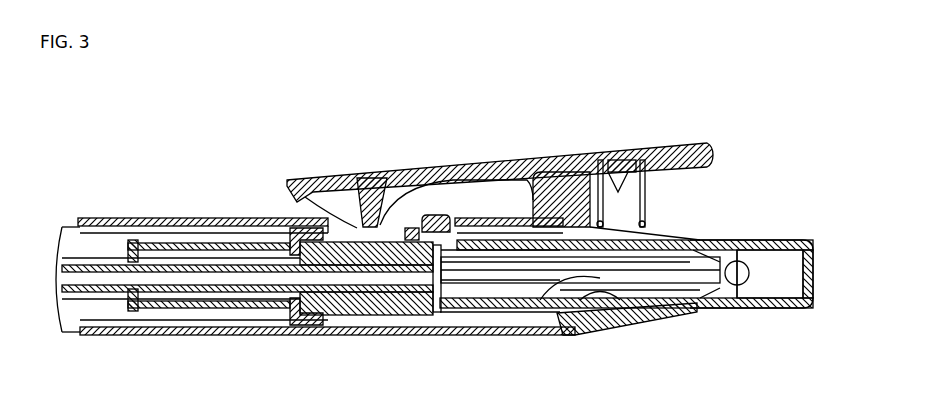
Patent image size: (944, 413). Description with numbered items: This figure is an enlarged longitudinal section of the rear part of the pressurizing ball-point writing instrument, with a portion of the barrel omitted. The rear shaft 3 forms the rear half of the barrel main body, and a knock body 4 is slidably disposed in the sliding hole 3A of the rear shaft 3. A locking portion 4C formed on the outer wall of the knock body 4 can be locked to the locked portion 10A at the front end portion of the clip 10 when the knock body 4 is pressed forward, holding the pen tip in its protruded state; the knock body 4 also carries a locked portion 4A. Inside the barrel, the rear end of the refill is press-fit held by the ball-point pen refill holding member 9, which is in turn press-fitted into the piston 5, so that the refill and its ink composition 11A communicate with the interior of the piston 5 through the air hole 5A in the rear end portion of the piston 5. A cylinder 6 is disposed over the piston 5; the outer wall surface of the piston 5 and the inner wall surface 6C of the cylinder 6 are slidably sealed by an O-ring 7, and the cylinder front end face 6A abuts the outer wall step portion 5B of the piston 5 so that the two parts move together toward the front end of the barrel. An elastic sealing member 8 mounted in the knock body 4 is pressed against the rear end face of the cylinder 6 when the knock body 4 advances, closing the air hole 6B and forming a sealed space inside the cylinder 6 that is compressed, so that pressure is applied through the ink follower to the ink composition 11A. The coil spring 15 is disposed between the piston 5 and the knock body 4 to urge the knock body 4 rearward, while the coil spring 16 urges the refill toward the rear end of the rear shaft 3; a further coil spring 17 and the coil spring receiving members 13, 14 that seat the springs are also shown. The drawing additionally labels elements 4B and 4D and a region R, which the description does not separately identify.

The rear shaft 3 is at (153, 218).
The sliding hole 3A is at (380, 170).
The knock body 4 is at (787, 308).
The locked portion 4A is at (487, 240).
The cap rear wall 4B is at (420, 310).
The locking portion 4C is at (436, 227).
The cap engaging portion 4D is at (413, 228).
The piston 5 is at (378, 317).
The air hole 5A is at (620, 308).
The outer wall step portion 5B is at (440, 303).
The cylinder 6 is at (680, 313).
The cylinder front end face 6A is at (473, 227).
The air hole 6B is at (738, 252).
The cylinder inner wall surface 6C is at (602, 315).
The O-ring 7 is at (557, 325).
The sealing member 8 is at (738, 290).
The ball-point pen refill holding member 9 is at (360, 315).
The clip 10 is at (533, 153).
The locked portion 10A is at (360, 227).
The ink composition 11A is at (228, 273).
The coil spring receiving member 13 is at (290, 225).
The coil spring receiving member 14 is at (135, 333).
The coil spring 15 is at (438, 303).
The coil spring 16 is at (282, 305).
The coil spring 17 is at (643, 218).
The rotation region R is at (585, 195).